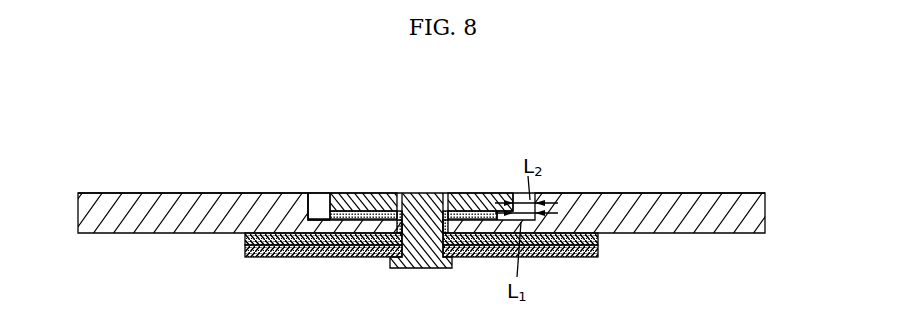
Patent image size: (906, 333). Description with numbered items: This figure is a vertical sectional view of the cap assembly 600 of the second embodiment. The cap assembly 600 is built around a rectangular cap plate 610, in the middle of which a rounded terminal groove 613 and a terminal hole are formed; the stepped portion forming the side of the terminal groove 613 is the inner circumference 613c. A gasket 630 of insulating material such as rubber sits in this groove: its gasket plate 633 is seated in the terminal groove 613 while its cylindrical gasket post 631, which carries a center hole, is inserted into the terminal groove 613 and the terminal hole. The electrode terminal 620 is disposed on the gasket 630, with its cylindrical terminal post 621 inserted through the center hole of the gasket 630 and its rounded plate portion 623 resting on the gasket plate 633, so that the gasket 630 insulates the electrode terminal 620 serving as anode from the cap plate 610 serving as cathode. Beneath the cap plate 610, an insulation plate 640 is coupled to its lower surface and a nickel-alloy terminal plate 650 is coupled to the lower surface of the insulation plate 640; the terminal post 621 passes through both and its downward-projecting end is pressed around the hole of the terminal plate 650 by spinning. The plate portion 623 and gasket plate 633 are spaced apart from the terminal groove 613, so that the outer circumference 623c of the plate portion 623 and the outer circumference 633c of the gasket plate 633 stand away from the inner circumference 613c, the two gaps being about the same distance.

The cap assembly 600 is at (113, 156).
The cap plate 610 is at (703, 200).
The terminal groove 613 is at (311, 186).
The inner circumference of the terminal groove 613c is at (533, 195).
The electrode terminal 620 is at (473, 166).
The terminal post 621 is at (446, 196).
The plate portion 623 is at (480, 213).
The outer circumference of the plate portion 623c is at (322, 191).
The gasket 630 is at (391, 183).
The gasket post 631 is at (428, 222).
The gasket plate 633 is at (352, 200).
The outer circumference of the gasket plate 633c is at (293, 258).
The insulation plate 640 is at (598, 238).
The terminal plate 650 is at (580, 257).